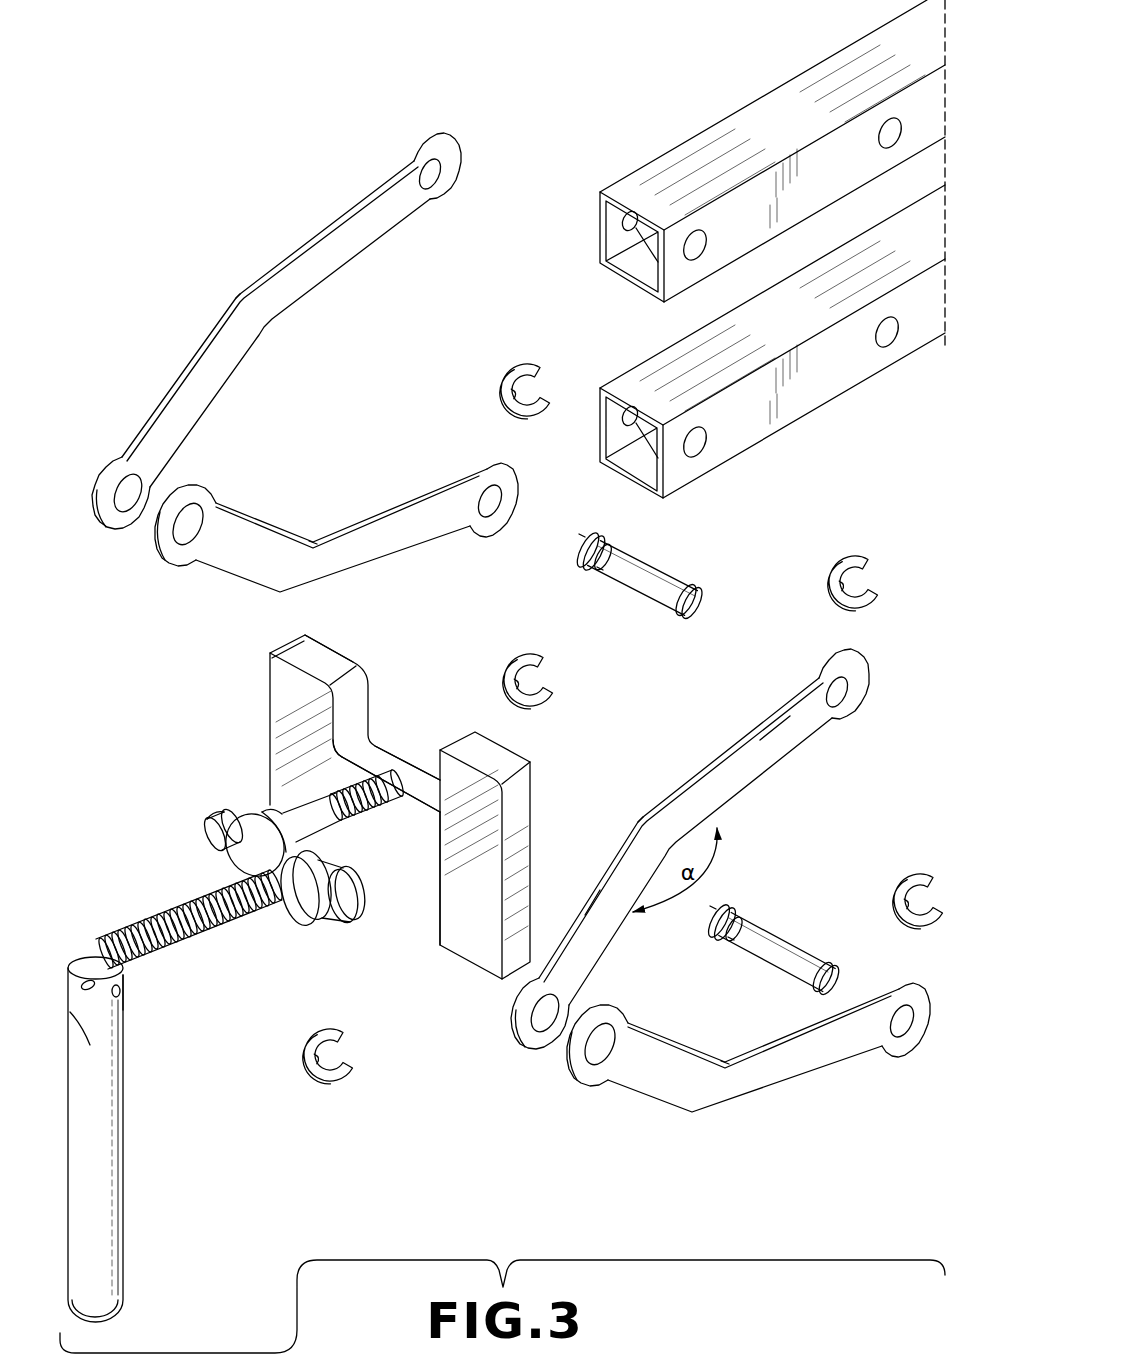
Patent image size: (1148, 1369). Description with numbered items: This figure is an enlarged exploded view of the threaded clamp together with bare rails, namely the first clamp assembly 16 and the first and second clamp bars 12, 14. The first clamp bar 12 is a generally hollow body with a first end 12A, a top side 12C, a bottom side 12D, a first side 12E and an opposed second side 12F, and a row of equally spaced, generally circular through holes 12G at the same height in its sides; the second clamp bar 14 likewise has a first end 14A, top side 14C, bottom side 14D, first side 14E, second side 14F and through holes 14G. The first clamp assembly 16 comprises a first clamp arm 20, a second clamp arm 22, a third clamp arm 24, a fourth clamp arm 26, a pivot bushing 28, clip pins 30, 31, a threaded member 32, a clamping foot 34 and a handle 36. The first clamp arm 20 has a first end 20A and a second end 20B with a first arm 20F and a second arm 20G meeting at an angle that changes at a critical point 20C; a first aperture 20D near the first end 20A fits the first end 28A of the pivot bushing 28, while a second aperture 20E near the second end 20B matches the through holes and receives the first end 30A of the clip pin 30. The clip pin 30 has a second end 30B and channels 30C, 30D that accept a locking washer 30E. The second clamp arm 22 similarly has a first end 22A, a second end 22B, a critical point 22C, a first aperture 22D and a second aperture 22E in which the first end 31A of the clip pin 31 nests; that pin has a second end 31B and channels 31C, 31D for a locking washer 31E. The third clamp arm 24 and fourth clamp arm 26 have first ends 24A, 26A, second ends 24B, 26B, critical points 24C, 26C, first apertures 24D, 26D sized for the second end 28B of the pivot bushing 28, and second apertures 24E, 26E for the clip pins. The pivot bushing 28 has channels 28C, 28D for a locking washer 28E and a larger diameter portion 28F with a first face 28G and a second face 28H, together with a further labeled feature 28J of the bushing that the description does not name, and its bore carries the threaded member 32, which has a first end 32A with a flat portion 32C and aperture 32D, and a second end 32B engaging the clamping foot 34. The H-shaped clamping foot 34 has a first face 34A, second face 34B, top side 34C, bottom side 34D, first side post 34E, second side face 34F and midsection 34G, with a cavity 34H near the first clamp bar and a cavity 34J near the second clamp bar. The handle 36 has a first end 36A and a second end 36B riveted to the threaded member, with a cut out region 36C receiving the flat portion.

The first clamp bar 12 is at (778, 95).
The first end 12A is at (600, 225).
The top side 12C is at (882, 45).
The bottom side 12D is at (615, 285).
The first side 12E is at (775, 191).
The second side 12F is at (670, 157).
The through holes 12G is at (684, 258).
The second clamp bar 14 is at (842, 385).
The first end 14A is at (650, 500).
The top side 14C is at (748, 336).
The bottom side 14D is at (632, 478).
The first side 14E is at (775, 391).
The second side 14F is at (630, 372).
The through holes 14G is at (898, 342).
The first clamp assembly 16 is at (258, 130).
The first clamp arm 20 is at (740, 730).
The first end 20A is at (512, 1030).
The second end 20B is at (845, 728).
The critical point 20C is at (636, 824).
The first aperture 20D is at (540, 1045).
The second aperture 20E is at (842, 700).
The first arm 20F is at (620, 922).
The second arm 20G is at (762, 778).
The second clamp arm 22 is at (770, 1082).
The first end 22A is at (585, 1082).
The second end 22B is at (895, 1050).
The critical point 22C is at (700, 1112).
The first aperture 22D is at (606, 1056).
The second aperture 22E is at (908, 1025).
The third clamp arm 24 is at (275, 595).
The first end 24A is at (187, 487).
The second end 24B is at (480, 468).
The critical point 24C is at (308, 537).
The first aperture 24D is at (194, 535).
The second aperture 24E is at (500, 505).
The fourth clamp arm 26 is at (318, 212).
The first end 26A is at (108, 468).
The second end 26B is at (418, 150).
The critical point 26C is at (232, 300).
The first aperture 26D is at (127, 512).
The second aperture 26E is at (434, 182).
The pivot bushing 28 is at (288, 905).
The first end 28A is at (352, 912).
The second end 28B is at (212, 820).
The first channel 28C is at (345, 868).
The second channel 28D is at (212, 846).
The locking washer 28E is at (340, 1078).
The larger diameter portion 28F is at (274, 832).
The first face 28G is at (318, 920).
The second face 28H is at (216, 806).
The shoulder of nut 28J is at (266, 815).
The clip pin 30 is at (637, 588).
The first end 30A is at (695, 615).
The second end 30B is at (578, 538).
The first channel 30C is at (668, 607).
The second channel 30D is at (596, 575).
The locking washer 30E is at (503, 383).
The clip pin 31 is at (762, 962).
The first end 31A is at (838, 978).
The second end 31B is at (718, 908).
The first channel 31C is at (805, 975).
The second channel 31D is at (738, 925).
The locking washer 31E is at (512, 668).
The threaded member 32 is at (200, 878).
The first end 32A is at (118, 1010).
The second end 32B is at (392, 790).
The flat portion 32C is at (100, 948).
The aperture 32D is at (120, 985).
The clamping foot 34 is at (287, 690).
The first face 34A is at (303, 738).
The second face 34B is at (337, 645).
The top side 34C is at (495, 757).
The bottom side 34D is at (462, 963).
The first side post 34E is at (492, 822).
The second side face 34F is at (288, 649).
The midsection 34G is at (345, 775).
The cavity 34H is at (356, 712).
The cavity 34J is at (428, 888).
The handle 36 is at (125, 1155).
The first end 36A is at (110, 1320).
The second end 36B is at (82, 958).
The cut out region 36C is at (85, 1040).